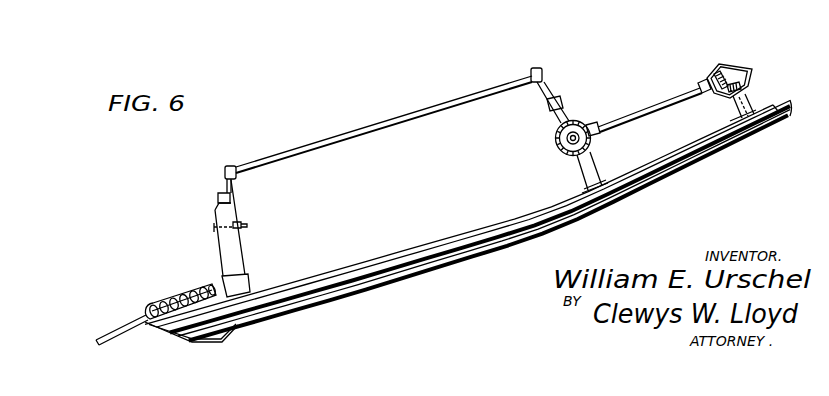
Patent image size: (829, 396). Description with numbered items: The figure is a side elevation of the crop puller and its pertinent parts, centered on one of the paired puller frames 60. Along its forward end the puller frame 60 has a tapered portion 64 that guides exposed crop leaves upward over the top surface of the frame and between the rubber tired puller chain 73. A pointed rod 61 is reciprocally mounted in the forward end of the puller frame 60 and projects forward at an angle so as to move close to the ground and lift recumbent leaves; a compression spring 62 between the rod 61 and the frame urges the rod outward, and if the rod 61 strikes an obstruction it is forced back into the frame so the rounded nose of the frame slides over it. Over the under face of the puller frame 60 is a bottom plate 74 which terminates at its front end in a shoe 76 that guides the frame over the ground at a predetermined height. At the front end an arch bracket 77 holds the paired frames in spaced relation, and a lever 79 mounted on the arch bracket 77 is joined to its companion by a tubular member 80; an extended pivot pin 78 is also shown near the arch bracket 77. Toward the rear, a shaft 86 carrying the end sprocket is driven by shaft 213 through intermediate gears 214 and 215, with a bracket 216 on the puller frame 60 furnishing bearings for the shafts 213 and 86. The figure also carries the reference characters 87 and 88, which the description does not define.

The puller frame 60 is at (404, 251).
The pointed rod 61 is at (120, 332).
The compression spring 62 is at (185, 301).
The tapered portion 64 is at (151, 308).
The rubber tired puller chain 73 is at (312, 299).
The bottom plate 74 is at (364, 292).
The shoe 76 is at (232, 338).
The arch bracket 77 is at (230, 259).
The extended pivot pin 78 is at (244, 223).
The lever 79 is at (225, 185).
The tubular member 80 is at (313, 143).
The shaft 86 is at (753, 97).
The clamp 87 is at (593, 125).
The wheel / roller 88 is at (571, 120).
The shaft 213 is at (658, 96).
The intermediate gear 214 is at (719, 65).
The intermediate gear 215 is at (729, 78).
The bracket 216 is at (750, 72).